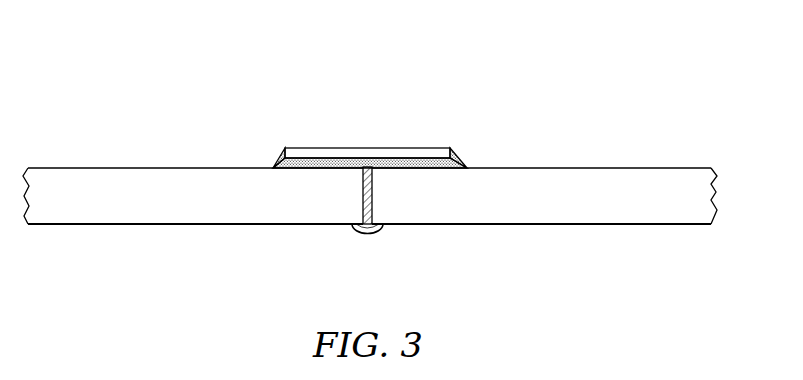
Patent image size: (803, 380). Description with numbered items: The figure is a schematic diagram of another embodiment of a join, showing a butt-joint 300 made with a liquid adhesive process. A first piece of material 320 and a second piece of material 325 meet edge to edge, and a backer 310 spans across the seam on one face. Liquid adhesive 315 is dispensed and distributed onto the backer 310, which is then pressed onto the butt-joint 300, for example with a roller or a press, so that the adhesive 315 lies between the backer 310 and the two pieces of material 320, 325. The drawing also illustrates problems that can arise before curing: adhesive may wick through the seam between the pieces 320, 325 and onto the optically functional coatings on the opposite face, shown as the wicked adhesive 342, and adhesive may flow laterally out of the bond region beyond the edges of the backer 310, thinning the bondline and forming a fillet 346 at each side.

The butt-joint 300 is at (138, 66).
The backer 310 is at (394, 153).
The adhesive 315 is at (329, 152).
The first piece of material 320 is at (161, 181).
The second piece of material 325 is at (595, 181).
The wicked adhesive 342 is at (372, 245).
The fillet 346 is at (273, 158).